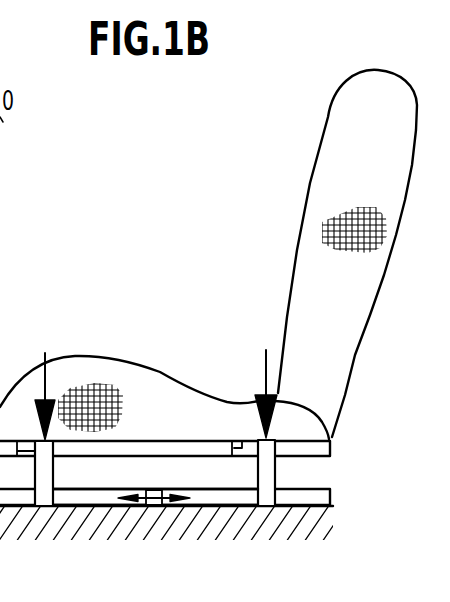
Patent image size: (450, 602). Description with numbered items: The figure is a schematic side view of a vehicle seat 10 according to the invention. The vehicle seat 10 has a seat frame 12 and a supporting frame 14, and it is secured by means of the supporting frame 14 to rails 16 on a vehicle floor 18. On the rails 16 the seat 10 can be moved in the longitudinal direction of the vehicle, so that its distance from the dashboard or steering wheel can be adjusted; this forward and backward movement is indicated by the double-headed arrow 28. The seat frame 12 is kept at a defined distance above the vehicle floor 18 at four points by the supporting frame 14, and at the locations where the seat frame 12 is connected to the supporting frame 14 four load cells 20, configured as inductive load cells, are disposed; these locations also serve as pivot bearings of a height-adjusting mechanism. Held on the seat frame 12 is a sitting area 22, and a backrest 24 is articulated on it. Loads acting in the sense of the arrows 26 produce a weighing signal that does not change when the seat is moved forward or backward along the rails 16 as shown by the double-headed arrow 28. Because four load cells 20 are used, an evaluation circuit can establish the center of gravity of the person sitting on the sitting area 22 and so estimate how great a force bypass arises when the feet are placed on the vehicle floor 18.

The vehicle seat 10 is at (281, 164).
The seat frame 12 is at (343, 475).
The supporting frame 14 is at (42, 488).
The rails 16 is at (97, 498).
The vehicle floor 18 is at (13, 523).
The load cells 20 is at (242, 440).
The sitting area 22 is at (104, 330).
The backrest 24 is at (278, 241).
The arrows 26 is at (266, 350).
The double-headed arrow 28 is at (152, 505).